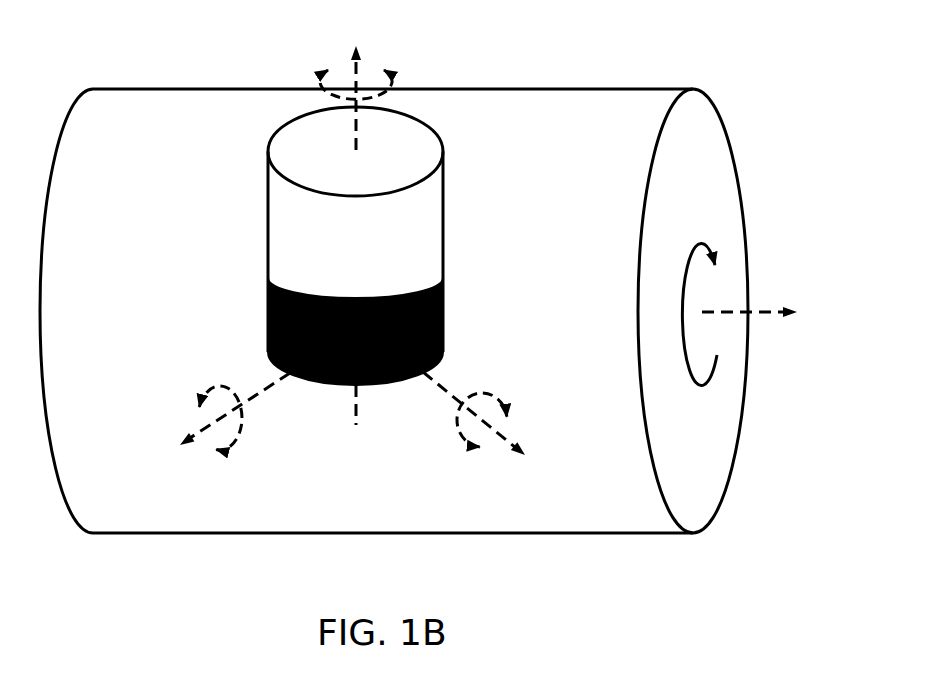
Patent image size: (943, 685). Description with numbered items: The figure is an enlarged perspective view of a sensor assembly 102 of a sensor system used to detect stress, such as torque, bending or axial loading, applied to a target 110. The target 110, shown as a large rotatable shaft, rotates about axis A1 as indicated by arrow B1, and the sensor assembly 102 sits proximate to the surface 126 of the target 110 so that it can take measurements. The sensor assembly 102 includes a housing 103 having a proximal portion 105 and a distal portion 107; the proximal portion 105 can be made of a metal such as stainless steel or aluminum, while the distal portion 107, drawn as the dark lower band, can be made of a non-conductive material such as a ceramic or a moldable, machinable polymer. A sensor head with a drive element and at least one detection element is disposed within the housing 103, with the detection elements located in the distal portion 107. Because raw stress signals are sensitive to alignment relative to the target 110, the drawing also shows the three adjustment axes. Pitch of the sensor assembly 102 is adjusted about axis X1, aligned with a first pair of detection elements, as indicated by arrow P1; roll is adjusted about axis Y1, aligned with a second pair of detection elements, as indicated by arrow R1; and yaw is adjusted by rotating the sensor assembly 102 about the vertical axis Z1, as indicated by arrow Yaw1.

The target 110 is at (394, 280).
The surface 126 is at (547, 89).
The sensor assembly 102 is at (406, 262).
The proximal portion 105 is at (432, 211).
The housing 103 is at (443, 249).
The distal portion 107 is at (445, 318).
The axis Z1 is at (364, 78).
The arrow Yaw1 is at (394, 83).
The axis X1 is at (200, 438).
The arrow P1 is at (246, 424).
The axis Y1 is at (512, 431).
The arrow R1 is at (511, 398).
The axis A1 is at (760, 306).
The arrow B1 is at (718, 258).